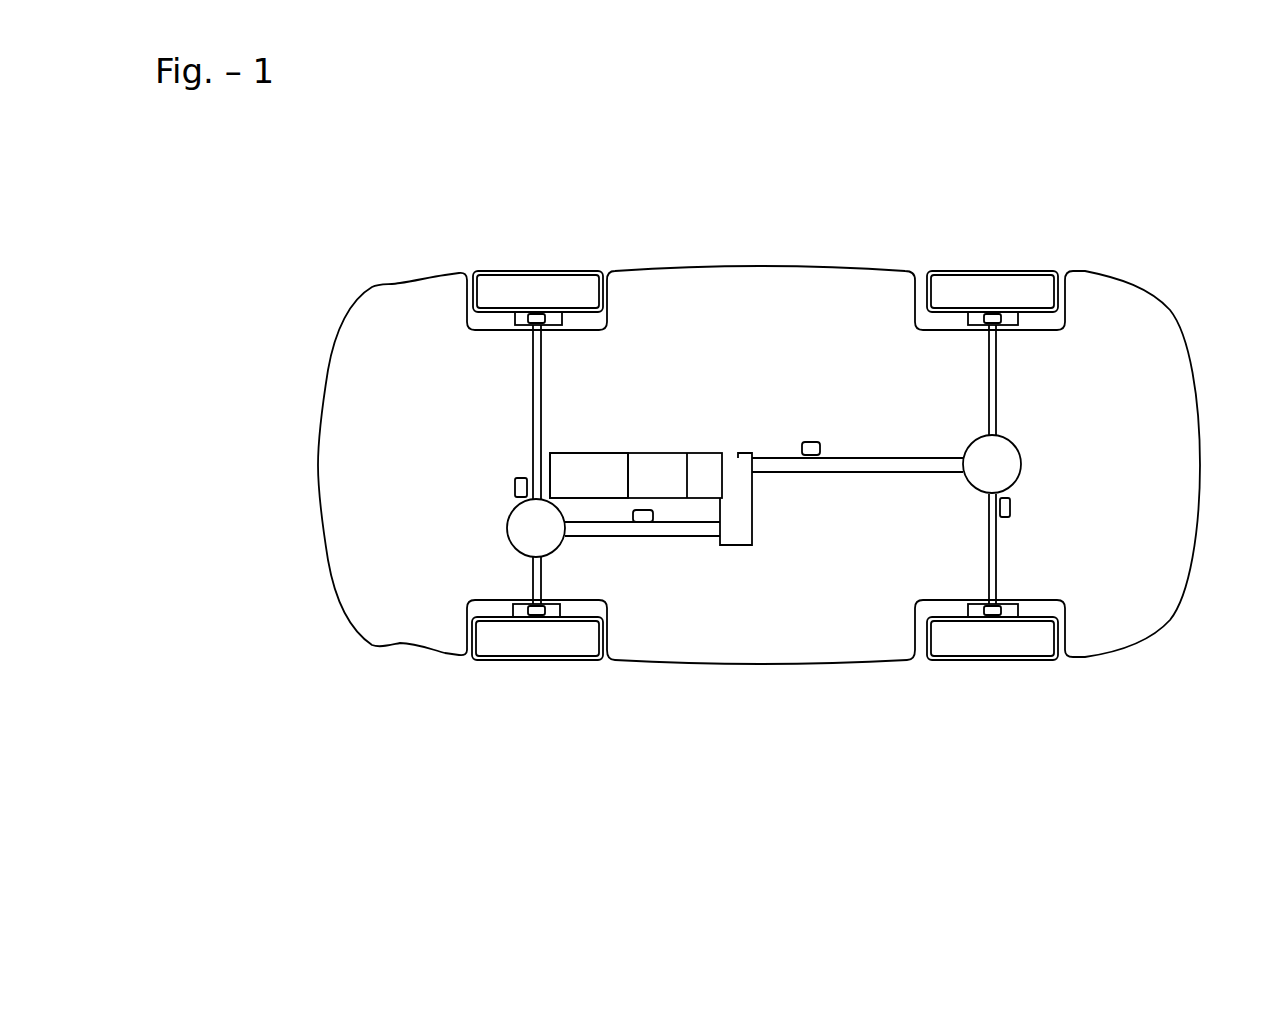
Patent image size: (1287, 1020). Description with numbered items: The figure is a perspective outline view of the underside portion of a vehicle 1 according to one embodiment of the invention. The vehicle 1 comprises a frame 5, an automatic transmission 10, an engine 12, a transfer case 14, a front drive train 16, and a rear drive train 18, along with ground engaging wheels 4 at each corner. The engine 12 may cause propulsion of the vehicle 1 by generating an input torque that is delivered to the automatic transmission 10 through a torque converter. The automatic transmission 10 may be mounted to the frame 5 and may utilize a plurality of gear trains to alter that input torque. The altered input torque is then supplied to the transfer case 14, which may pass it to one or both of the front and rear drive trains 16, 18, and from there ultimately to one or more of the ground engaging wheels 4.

The vehicle 1 is at (257, 356).
The ground engaging wheels 4 is at (512, 290).
The frame 5 is at (750, 267).
The automatic transmission 10 is at (650, 475).
The engine 12 is at (588, 477).
The transfer case 14 is at (725, 490).
The front drive train 16 is at (513, 466).
The rear drive train 18 is at (1040, 465).